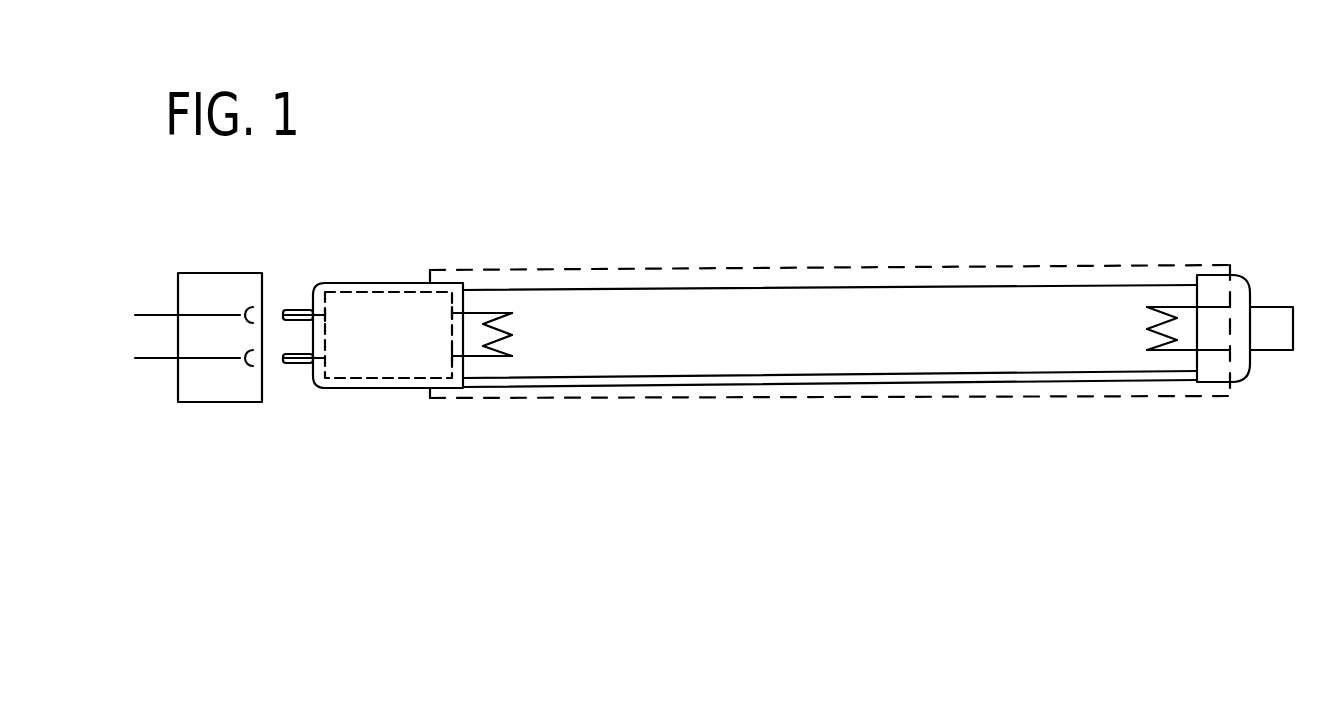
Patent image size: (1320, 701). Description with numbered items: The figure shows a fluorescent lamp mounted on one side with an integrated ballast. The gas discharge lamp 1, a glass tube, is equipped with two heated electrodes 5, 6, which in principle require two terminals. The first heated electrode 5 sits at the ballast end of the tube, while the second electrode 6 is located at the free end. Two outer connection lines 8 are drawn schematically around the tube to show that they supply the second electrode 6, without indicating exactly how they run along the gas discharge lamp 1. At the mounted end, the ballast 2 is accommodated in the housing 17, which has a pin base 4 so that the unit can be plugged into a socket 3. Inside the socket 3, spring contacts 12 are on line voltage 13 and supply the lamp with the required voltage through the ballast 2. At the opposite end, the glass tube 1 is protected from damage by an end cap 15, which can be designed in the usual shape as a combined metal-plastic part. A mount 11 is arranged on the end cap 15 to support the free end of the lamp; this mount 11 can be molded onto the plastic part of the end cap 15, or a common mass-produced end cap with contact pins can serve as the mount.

The gas discharge lamp 1 is at (870, 342).
The ballast 2 is at (382, 358).
The socket 3 is at (218, 383).
The pin base 4 is at (296, 343).
The heated electrode 5 is at (517, 327).
The second electrode 6 is at (1148, 348).
The outer connection lines 8 is at (828, 263).
The mount 11 is at (1273, 337).
The spring contacts 12 is at (233, 348).
The line voltage 13 is at (170, 338).
The end cap 15 is at (1240, 297).
The housing 17 is at (395, 390).